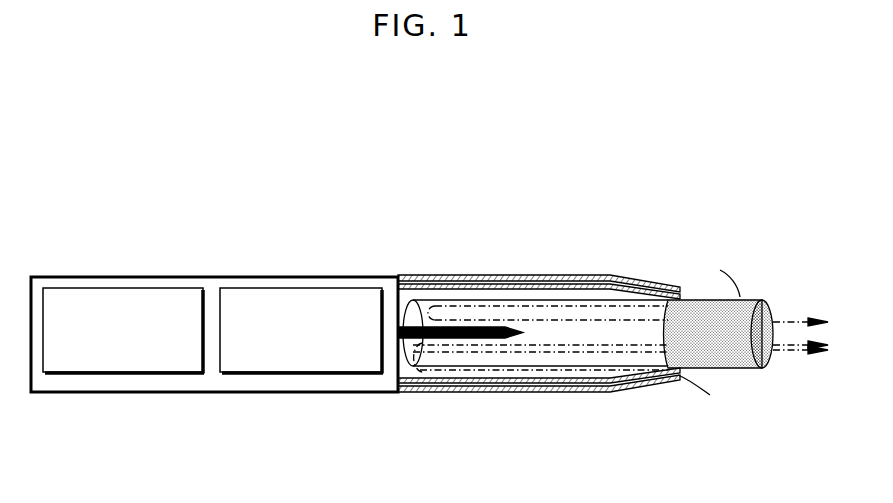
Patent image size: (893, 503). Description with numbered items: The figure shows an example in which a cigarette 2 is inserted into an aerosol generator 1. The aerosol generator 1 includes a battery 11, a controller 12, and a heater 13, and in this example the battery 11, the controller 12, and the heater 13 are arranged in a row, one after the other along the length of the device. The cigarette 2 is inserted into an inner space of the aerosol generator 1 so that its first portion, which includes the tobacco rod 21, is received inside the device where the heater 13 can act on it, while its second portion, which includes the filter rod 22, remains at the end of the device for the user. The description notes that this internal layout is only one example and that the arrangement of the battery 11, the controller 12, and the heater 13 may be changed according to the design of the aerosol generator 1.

The aerosol generator 1 is at (632, 180).
The cigarette 2 is at (613, 340).
The battery 11 is at (135, 288).
The controller 12 is at (318, 288).
The heater 13 is at (460, 327).
The tobacco rod 21 is at (553, 300).
The filter rod 22 is at (752, 300).